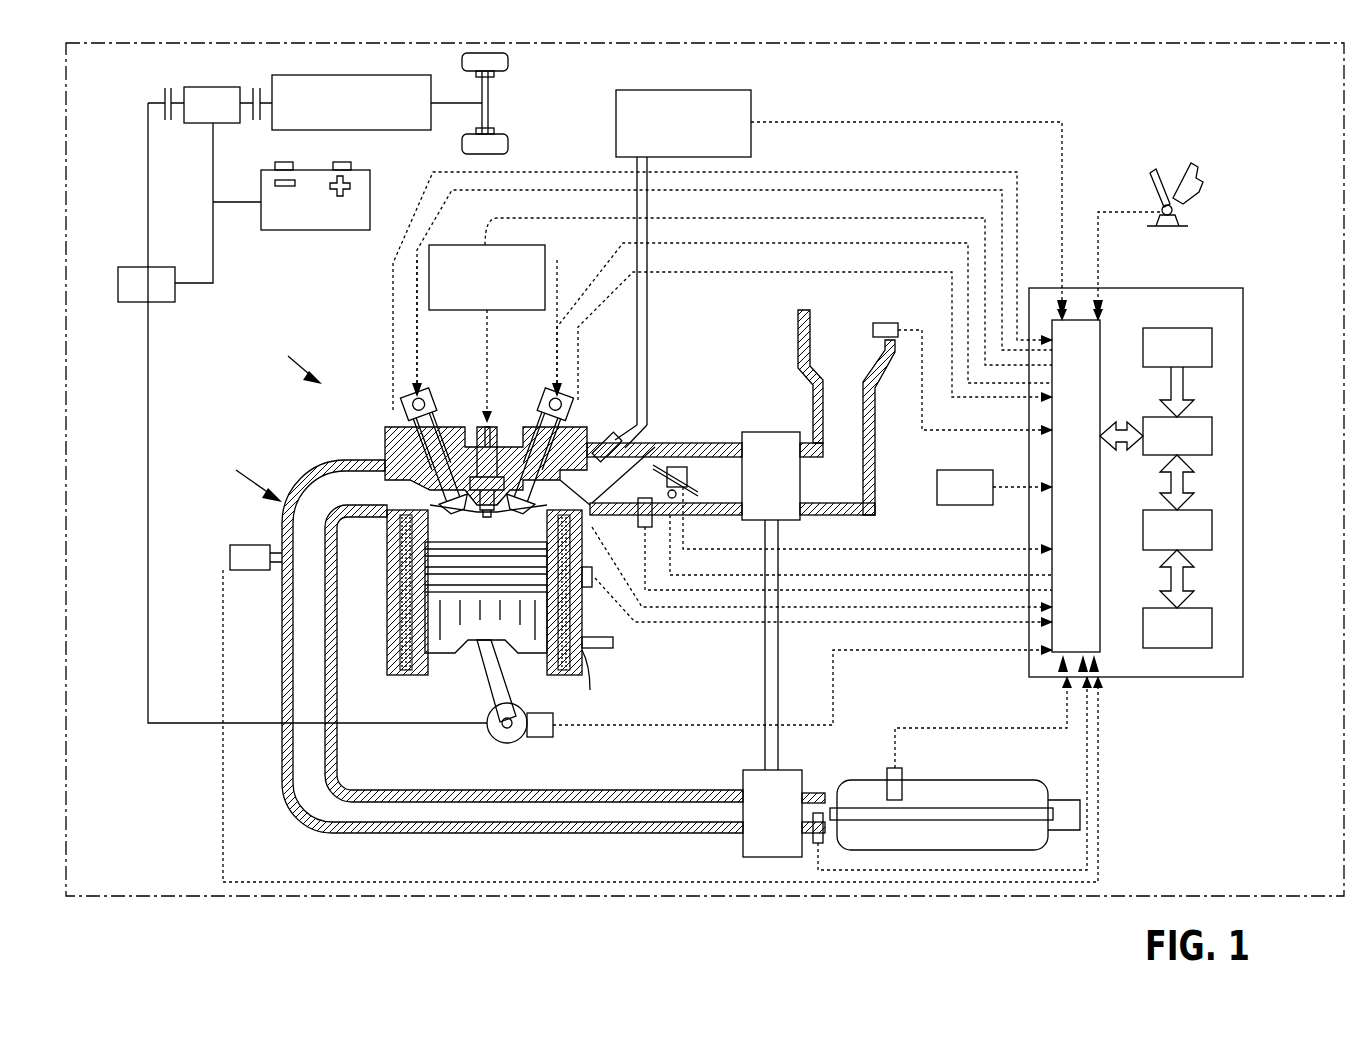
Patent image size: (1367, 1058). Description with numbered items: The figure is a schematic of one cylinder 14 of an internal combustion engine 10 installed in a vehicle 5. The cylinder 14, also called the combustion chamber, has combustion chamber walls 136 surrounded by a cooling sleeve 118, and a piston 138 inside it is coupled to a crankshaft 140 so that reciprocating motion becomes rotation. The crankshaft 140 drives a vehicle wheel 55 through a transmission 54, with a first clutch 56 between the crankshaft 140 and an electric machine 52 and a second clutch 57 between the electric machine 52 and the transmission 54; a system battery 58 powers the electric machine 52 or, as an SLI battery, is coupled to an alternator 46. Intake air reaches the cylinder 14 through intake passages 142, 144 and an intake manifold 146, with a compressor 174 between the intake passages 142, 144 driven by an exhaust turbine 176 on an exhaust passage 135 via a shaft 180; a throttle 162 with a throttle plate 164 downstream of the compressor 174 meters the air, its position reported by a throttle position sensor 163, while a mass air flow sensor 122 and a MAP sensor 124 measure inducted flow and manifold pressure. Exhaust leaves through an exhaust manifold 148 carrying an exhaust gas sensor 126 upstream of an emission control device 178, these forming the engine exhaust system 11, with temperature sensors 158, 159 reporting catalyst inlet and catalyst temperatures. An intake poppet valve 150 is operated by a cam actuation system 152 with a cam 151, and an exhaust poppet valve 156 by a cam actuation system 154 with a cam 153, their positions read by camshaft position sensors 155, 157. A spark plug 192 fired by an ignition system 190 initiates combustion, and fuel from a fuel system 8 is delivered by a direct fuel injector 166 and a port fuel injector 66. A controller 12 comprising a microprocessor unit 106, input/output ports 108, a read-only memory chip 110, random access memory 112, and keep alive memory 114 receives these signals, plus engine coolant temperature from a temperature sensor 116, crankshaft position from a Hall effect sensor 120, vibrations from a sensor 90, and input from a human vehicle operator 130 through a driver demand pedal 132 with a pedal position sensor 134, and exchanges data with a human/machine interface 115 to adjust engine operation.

The vehicle 5 is at (1344, 95).
The fuel system 8 is at (720, 90).
The internal combustion engine 10 is at (285, 360).
The engine exhaust system 11 is at (242, 479).
The controller 12 is at (1243, 288).
The cylinder 14 is at (430, 525).
The alternator 46 is at (118, 302).
The electric machine 52 is at (200, 87).
The transmission 54 is at (410, 130).
The vehicle wheel 55 is at (462, 62).
The first clutch 56 is at (165, 90).
The second clutch 57 is at (254, 90).
The system battery 58 is at (318, 230).
The port fuel injector 66 is at (610, 438).
The sensor 90 is at (596, 648).
The microprocessor unit 106 is at (1212, 432).
The input/output ports 108 is at (1100, 328).
The read-only memory chip 110 is at (1212, 345).
The random access memory 112 is at (1212, 534).
The keep alive memory 114 is at (1212, 636).
The human/machine interface 115 is at (994, 487).
The temperature sensor 116 is at (592, 587).
The cooling sleeve 118 is at (594, 683).
The Hall effect sensor 120 is at (548, 737).
The mass air flow sensor 122 is at (887, 323).
The MAP sensor 124 is at (648, 527).
The exhaust gas sensor 126 is at (230, 548).
The human vehicle operator 130 is at (1198, 176).
The driver demand pedal 132 is at (1152, 185).
The pedal position sensor 134 is at (1180, 210).
The exhaust passage 135 is at (655, 800).
The combustion chamber walls 136 is at (420, 690).
The piston 138 is at (470, 630).
The crankshaft 140 is at (495, 742).
The intake passage 142 is at (829, 383).
The intake passage 144 is at (716, 482).
The intake manifold 146 is at (623, 475).
The exhaust manifold 148 is at (534, 639).
The intake poppet valve 150 is at (545, 470).
The cam 151 is at (545, 405).
The cam actuation system 152 is at (552, 392).
The cam 153 is at (430, 410).
The cam actuation system 154 is at (430, 392).
The camshaft position sensor 155 is at (570, 420).
The exhaust poppet valve 156 is at (412, 460).
The camshaft position sensor 157 is at (405, 405).
The temperature sensor 158 is at (816, 843).
The temperature sensor 159 is at (902, 775).
The throttle 162 is at (672, 465).
The throttle position sensor 163 is at (676, 498).
The throttle plate 164 is at (668, 467).
The direct fuel injector 166 is at (587, 462).
The compressor 174 is at (771, 476).
The exhaust turbine 176 is at (784, 813).
The emission control device 178 is at (1010, 780).
The shaft 180 is at (778, 745).
The ignition system 190 is at (438, 245).
The spark plug 192 is at (472, 455).